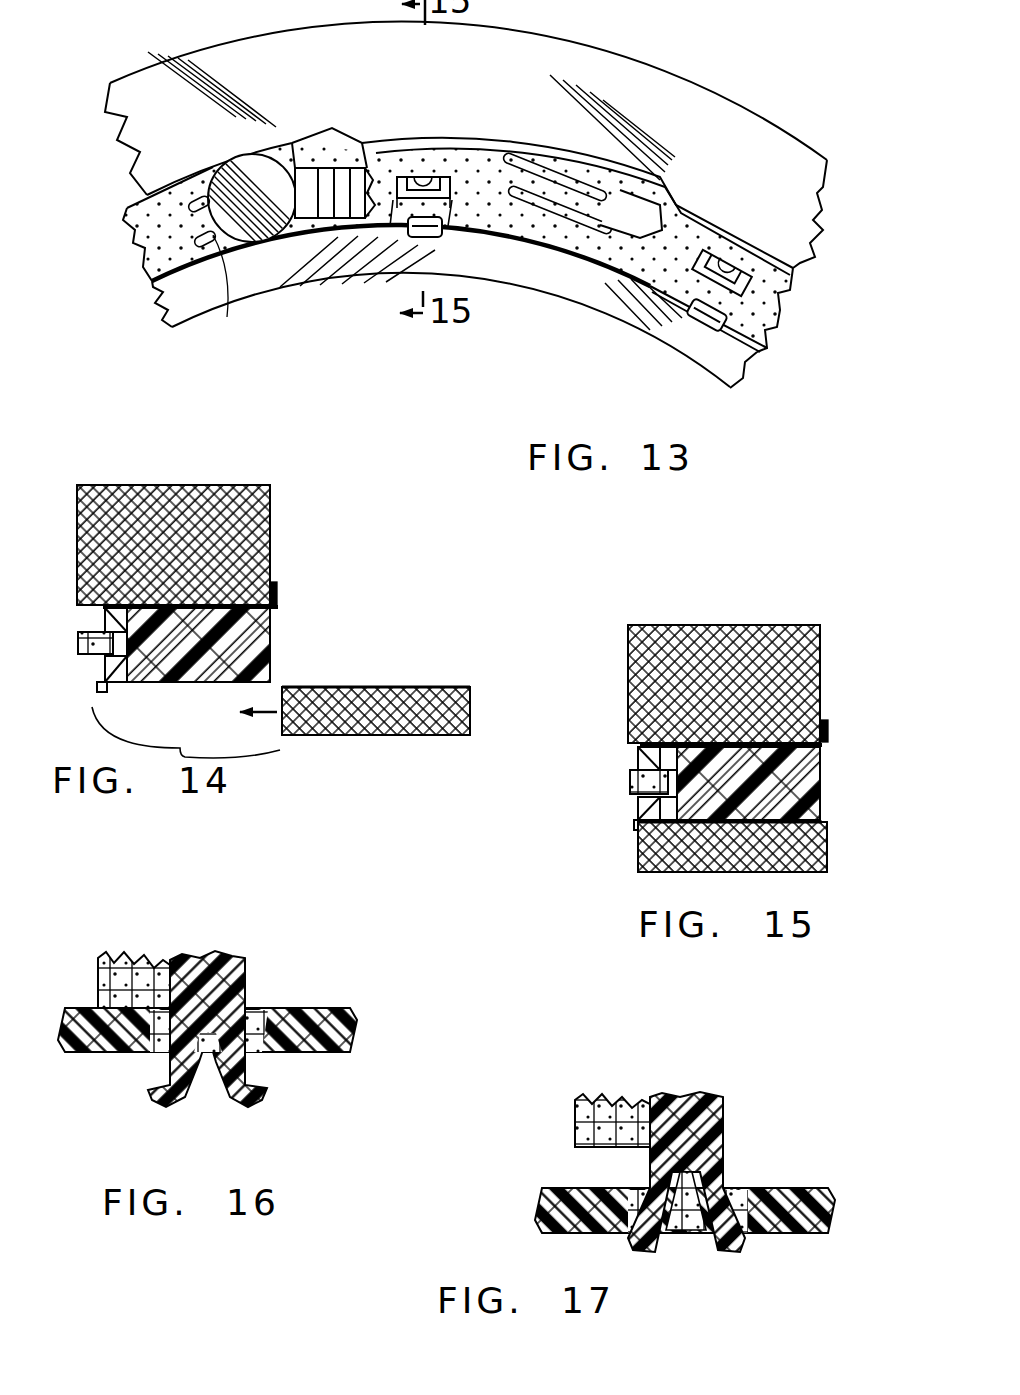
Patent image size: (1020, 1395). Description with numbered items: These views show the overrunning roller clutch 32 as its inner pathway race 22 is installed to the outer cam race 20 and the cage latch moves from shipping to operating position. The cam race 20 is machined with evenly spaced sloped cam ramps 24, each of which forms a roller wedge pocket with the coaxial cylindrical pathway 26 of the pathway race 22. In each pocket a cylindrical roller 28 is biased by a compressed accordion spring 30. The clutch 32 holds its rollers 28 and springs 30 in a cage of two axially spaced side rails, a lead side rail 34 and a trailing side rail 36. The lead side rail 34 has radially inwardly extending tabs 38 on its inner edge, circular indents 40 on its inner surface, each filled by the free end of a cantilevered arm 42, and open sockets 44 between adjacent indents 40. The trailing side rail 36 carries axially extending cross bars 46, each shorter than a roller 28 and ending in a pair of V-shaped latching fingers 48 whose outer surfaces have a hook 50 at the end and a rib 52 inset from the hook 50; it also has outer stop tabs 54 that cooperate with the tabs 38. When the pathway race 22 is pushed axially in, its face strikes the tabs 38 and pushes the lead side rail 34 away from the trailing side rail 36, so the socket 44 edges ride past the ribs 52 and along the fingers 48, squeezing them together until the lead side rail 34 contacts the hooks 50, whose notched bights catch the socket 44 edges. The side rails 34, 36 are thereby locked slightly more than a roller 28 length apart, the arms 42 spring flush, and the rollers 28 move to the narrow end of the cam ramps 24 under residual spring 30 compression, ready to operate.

In FIG. 13, the cam race 20 is at (677, 68).
In FIG. 14, the cam race 20 is at (183, 482).
In FIG. 15, the cam race 20 is at (740, 623).
In FIG. 13, the pathway race 22 is at (740, 380).
In FIG. 14, the pathway race 22 is at (378, 685).
In FIG. 15, the pathway race 22 is at (832, 865).
In FIG. 13, the cam ramp 24 is at (292, 143).
In FIG. 13, the cylindrical pathway 26 is at (760, 347).
In FIG. 14, the cylindrical pathway 26 is at (305, 688).
In FIG. 15, the cylindrical pathway 26 is at (828, 826).
In FIG. 13, the roller 28 is at (247, 170).
In FIG. 13, the spring 30 is at (345, 190).
In FIG. 13, the overrunning roller clutch 32 is at (812, 304).
In FIG. 13, the lead side rail 34 is at (800, 283).
In FIG. 14, the lead side rail 34 is at (103, 622).
In FIG. 15, the lead side rail 34 is at (633, 756).
In FIG. 16, the lead side rail 34 is at (318, 1007).
In FIG. 17, the lead side rail 34 is at (806, 1185).
In FIG. 13, the trailing side rail 36 is at (155, 238).
In FIG. 14, the trailing side rail 36 is at (272, 633).
In FIG. 15, the trailing side rail 36 is at (826, 769).
In FIG. 16, the trailing side rail 36 is at (185, 950).
In FIG. 17, the trailing side rail 36 is at (718, 1099).
In FIG. 13, the tab 38 is at (427, 236).
In FIG. 14, the tab 38 is at (97, 691).
In FIG. 15, the tab 38 is at (636, 823).
In FIG. 13, the indent 40 is at (292, 145).
In FIG. 13, the cantilevered arm 42 is at (570, 213).
In FIG. 13, the socket 44 is at (432, 172).
In FIG. 16, the socket 44 is at (257, 1010).
In FIG. 17, the socket 44 is at (738, 1190).
In FIG. 14, the cross bar 46 is at (182, 650).
In FIG. 15, the cross bar 46 is at (718, 805).
In FIG. 16, the cross bar 46 is at (205, 985).
In FIG. 17, the cross bar 46 is at (690, 1120).
In FIG. 13, the latching finger 48 is at (393, 168).
In FIG. 14, the latching finger 48 is at (97, 651).
In FIG. 15, the latching finger 48 is at (642, 796).
In FIG. 16, the latching finger 48 is at (217, 1083).
In FIG. 17, the latching finger 48 is at (702, 1225).
In FIG. 13, the hook 50 is at (397, 207).
In FIG. 14, the hook 50 is at (78, 643).
In FIG. 15, the hook 50 is at (630, 786).
In FIG. 16, the hook 50 is at (165, 1098).
In FIG. 17, the hook 50 is at (640, 1245).
In FIG. 16, the rib 52 is at (165, 1055).
In FIG. 17, the rib 52 is at (645, 1190).
In FIG. 14, the stop tab 54 is at (278, 600).
In FIG. 15, the stop tab 54 is at (826, 740).